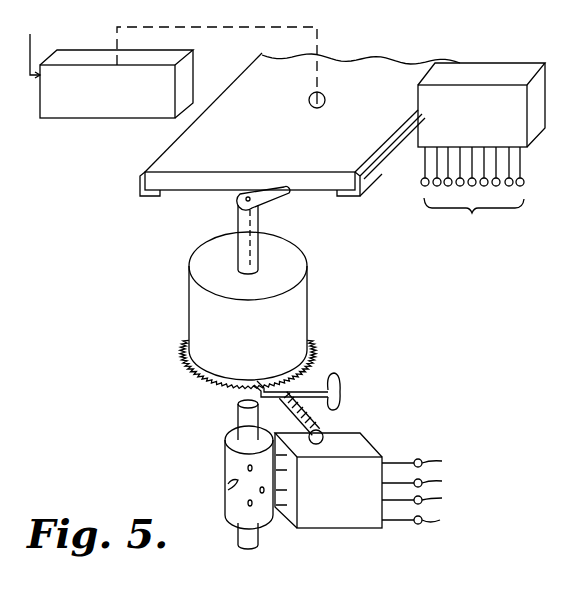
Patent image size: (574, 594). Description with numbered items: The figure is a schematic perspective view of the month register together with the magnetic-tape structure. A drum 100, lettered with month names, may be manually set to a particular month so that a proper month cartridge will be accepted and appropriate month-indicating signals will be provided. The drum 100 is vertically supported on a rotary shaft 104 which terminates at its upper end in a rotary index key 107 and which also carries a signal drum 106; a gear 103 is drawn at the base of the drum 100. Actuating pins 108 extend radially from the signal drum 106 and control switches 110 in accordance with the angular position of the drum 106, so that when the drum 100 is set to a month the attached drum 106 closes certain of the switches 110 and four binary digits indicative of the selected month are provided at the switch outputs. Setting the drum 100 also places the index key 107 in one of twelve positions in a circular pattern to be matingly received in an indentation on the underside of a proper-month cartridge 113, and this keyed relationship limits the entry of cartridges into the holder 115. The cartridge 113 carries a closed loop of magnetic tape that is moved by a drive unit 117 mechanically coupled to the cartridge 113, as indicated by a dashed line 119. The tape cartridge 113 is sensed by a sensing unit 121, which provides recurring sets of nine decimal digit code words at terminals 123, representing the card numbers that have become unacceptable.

The drum 100 is at (307, 311).
The gear 103 is at (190, 366).
The rotary shaft 104 is at (238, 418).
The signal drum 106 is at (230, 458).
The rotary index key 107 is at (275, 201).
The actuating pins 108 is at (228, 488).
The switches 110 is at (358, 466).
The cartridge 113 is at (185, 131).
The holder 115 is at (375, 173).
The drive unit 117 is at (90, 118).
The dashed line 119 is at (265, 27).
The sensing unit 121 is at (458, 73).
The terminals 123 is at (472, 194).